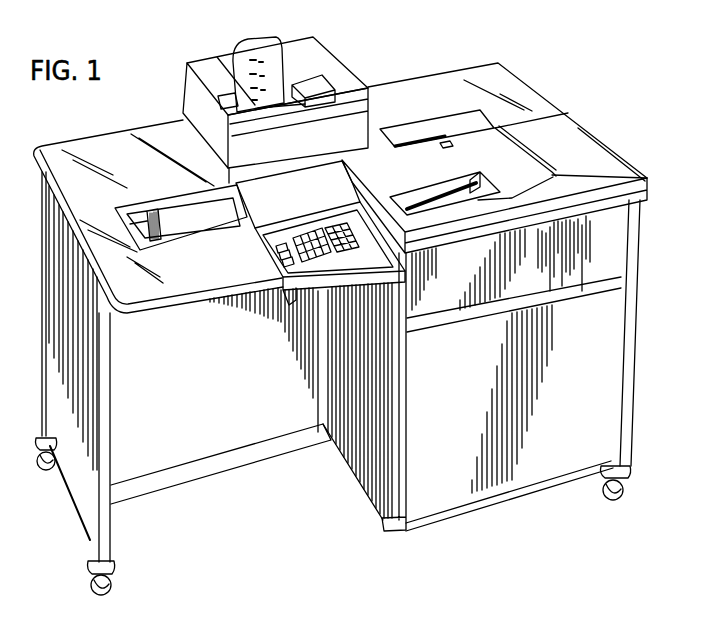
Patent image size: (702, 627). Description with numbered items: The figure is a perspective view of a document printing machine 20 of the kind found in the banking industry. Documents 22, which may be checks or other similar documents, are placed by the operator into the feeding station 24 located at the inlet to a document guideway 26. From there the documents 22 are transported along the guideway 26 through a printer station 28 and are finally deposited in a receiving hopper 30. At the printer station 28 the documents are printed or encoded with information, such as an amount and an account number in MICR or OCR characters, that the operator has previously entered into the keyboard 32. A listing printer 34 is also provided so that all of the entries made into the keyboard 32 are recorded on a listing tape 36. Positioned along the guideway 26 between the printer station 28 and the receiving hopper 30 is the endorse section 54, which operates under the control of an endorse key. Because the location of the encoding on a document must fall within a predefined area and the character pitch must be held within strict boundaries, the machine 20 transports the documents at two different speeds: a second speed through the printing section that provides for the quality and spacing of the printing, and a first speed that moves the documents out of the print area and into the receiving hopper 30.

The document printing machine 20 is at (530, 68).
The documents 22 is at (470, 197).
The feeding station 24 is at (161, 191).
The document guideway 26 is at (308, 180).
The printer station 28 is at (432, 130).
The receiving hopper 30 is at (432, 170).
The keyboard 32 is at (310, 273).
The listing printer 34 is at (339, 49).
The listing tape 36 is at (247, 47).
The endorse section 54 is at (530, 136).